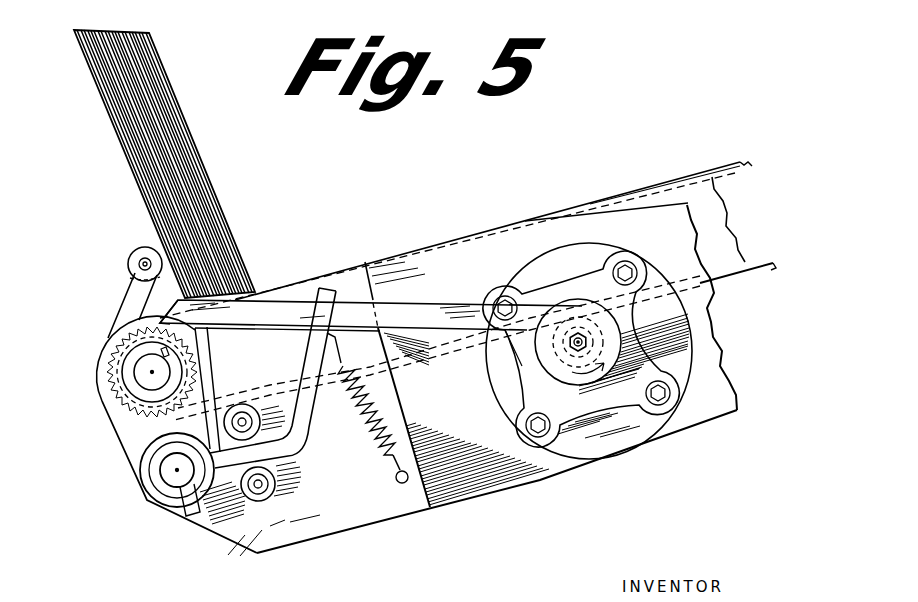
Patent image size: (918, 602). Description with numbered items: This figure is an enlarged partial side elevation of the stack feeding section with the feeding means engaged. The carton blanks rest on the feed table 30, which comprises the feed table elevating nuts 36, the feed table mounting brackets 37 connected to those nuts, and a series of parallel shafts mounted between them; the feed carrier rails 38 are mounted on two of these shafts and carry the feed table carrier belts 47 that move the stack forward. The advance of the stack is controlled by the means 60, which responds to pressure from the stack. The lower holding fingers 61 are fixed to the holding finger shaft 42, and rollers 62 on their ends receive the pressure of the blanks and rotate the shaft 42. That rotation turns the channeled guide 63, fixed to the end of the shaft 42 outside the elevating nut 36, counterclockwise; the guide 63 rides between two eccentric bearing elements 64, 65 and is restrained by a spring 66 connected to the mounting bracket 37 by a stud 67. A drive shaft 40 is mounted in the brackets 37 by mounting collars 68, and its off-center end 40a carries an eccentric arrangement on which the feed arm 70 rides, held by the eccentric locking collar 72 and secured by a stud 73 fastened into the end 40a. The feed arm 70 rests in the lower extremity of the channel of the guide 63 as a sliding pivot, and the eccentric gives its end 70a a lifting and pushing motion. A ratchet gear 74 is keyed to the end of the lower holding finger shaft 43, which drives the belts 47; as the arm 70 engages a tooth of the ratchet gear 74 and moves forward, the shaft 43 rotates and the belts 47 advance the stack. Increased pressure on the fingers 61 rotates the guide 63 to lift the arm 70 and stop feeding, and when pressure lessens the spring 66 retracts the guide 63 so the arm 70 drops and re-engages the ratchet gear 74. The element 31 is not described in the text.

The feed table 30 is at (738, 360).
The strap 31 is at (739, 211).
The feed table elevating nut 36 is at (290, 542).
The feed table mounting bracket 37 is at (474, 437).
The feed carrier rail 38 is at (726, 258).
The drive shaft 40 is at (545, 384).
The end of shaft 40a is at (560, 362).
The holding finger shaft 42 is at (170, 472).
The lower holding finger shaft 43 is at (148, 382).
The feed table carrier belt 47 is at (740, 161).
The stack advance control means 60 is at (100, 342).
The lower holding finger 61 is at (124, 287).
The roller 62 is at (128, 262).
The channeled guide 63 is at (304, 415).
The eccentric bearing element 64 is at (250, 404).
The eccentric bearing element 65 is at (278, 474).
The spring 66 is at (372, 403).
The stud 67 is at (395, 479).
The mounting collar 68 is at (598, 244).
The feed arm 70 is at (443, 302).
The end of feed arm 70a is at (198, 333).
The eccentric locking collar 72 is at (580, 300).
The stud 73 is at (577, 350).
The ratchet gear 74 is at (112, 376).